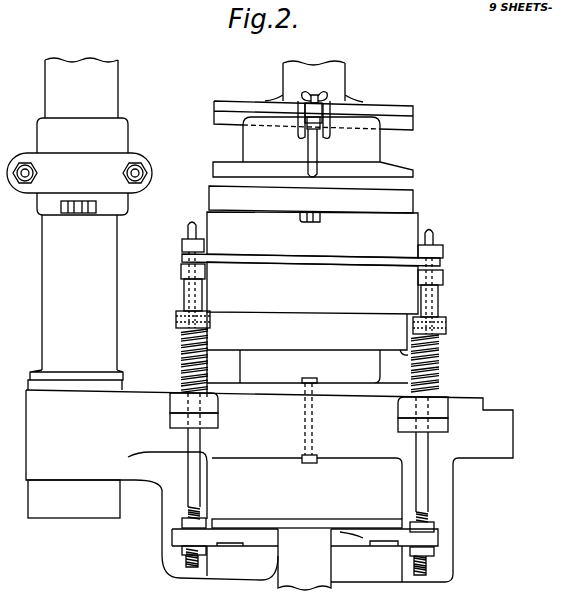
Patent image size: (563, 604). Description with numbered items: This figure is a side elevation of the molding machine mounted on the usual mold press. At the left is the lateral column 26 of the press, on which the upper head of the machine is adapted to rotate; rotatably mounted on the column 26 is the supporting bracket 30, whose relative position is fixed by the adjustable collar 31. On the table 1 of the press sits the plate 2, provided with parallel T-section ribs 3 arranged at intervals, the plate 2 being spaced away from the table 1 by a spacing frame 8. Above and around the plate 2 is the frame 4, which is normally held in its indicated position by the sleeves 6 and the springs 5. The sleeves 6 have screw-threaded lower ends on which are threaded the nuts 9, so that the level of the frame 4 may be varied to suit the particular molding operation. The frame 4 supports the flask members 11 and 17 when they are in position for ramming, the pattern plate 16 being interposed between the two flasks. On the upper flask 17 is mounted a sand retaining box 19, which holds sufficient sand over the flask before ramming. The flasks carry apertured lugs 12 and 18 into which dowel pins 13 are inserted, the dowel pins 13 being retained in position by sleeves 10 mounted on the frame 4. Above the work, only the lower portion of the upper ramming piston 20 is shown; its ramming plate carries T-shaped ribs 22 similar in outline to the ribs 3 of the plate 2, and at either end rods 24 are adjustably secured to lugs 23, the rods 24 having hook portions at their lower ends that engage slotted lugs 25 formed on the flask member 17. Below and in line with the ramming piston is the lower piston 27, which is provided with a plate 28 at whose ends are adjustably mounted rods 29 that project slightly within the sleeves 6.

The table 1 is at (269, 440).
The plate 2 is at (338, 392).
The T-section ribs 3 is at (307, 366).
The frame 4 is at (307, 354).
The springs 5 is at (181, 350).
The sleeves 6 is at (181, 362).
The spacing frame 8 is at (175, 406).
The nuts 9 is at (173, 418).
The sleeves 10 is at (184, 300).
The flask member 11 is at (312, 288).
The apertured lugs 12 is at (181, 272).
The dowel pins 13 is at (188, 228).
The pattern plate 16 is at (264, 259).
The flask member 17 is at (312, 235).
The apertured lugs 18 is at (182, 246).
The sand retaining box 19 is at (311, 199).
The upper ramming piston 20 is at (361, 109).
The T-shaped ribs 22 is at (313, 147).
The lugs 23 is at (301, 114).
The rods 24 is at (319, 155).
The slotted lugs 25 is at (322, 218).
The lateral column 26 is at (78, 224).
The lower piston 27 is at (304, 559).
The plate 28 is at (302, 527).
The rods 29 is at (201, 490).
The supporting bracket 30 is at (79, 173).
The adjustable collar 31 is at (104, 209).